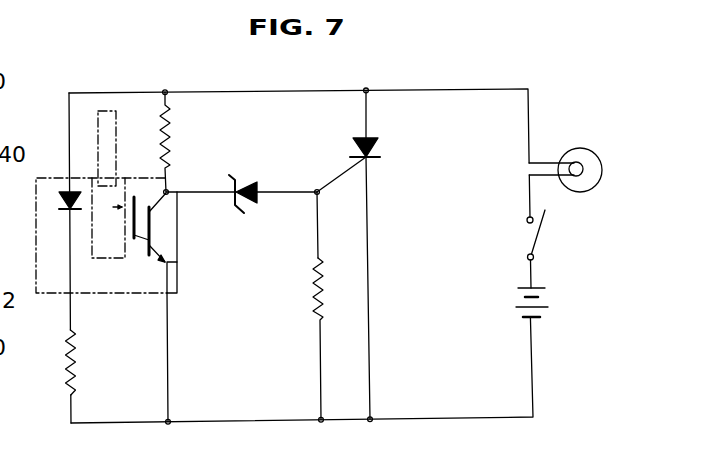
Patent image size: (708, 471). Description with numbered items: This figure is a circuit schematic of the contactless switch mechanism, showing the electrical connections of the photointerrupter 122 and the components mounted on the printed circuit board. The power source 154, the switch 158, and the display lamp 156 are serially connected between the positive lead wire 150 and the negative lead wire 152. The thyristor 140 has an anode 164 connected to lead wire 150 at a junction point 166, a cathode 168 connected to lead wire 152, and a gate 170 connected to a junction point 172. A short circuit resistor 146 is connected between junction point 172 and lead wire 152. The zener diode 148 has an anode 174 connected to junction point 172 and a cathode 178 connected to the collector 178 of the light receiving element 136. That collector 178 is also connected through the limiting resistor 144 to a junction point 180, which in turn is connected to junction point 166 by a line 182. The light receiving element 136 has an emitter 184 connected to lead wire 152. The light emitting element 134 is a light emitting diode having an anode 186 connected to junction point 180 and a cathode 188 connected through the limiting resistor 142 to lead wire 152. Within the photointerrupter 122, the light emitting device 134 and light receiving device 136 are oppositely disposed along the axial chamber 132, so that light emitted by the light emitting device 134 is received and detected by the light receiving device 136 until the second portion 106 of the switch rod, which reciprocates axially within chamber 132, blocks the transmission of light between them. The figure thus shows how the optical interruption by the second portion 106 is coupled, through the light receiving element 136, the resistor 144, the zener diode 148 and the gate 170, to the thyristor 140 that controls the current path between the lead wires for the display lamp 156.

The second portion of switch rod 106 is at (120, 120).
The photointerrupter 122 is at (178, 274).
The axial passageway or chamber 132 is at (116, 240).
The light emitting device 134 is at (53, 206).
The light receiving device 136 is at (165, 230).
The thyristor 140 is at (401, 260).
The limiting resistor 142 is at (70, 374).
The limiting resistor 144 is at (170, 132).
The short circuit resistor 146 is at (313, 279).
The zener diode 148 is at (273, 201).
The positive lead wire 150 is at (477, 89).
The negative lead wire 152 is at (100, 426).
The power source 154 is at (542, 307).
The display lamp 156 is at (580, 148).
The switch 158 is at (543, 233).
The anode of thyristor 164 is at (368, 138).
The junction point 166 is at (367, 89).
The cathode of thyristor 168 is at (378, 160).
The gate of thyristor 170 is at (363, 160).
The junction point 172 is at (315, 196).
The anode of zener diode 174 is at (258, 200).
The cathode of zener diode / collector of light receiving element 178 is at (168, 190).
The junction point 180 is at (166, 91).
The line 182 is at (277, 91).
The emitter of light receiving element 184 is at (178, 263).
The anode of light emitting diode 186 is at (40, 218).
The cathode of light emitting diode 188 is at (68, 211).